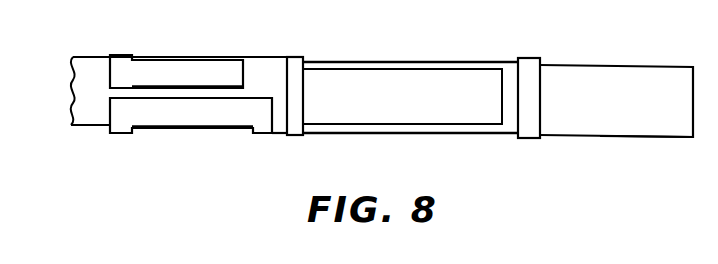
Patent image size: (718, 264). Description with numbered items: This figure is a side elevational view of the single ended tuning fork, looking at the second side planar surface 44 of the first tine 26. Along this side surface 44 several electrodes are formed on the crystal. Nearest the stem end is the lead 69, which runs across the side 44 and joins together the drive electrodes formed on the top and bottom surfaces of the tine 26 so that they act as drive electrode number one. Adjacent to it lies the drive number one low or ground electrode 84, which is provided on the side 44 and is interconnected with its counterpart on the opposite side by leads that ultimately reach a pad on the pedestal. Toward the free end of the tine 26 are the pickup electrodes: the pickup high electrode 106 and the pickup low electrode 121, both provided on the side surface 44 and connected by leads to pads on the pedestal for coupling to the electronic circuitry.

The pickup low electrode 121 is at (182, 65).
The pickup high electrode 106 is at (245, 112).
The drive No. 1 low electrode 84 is at (475, 80).
The lead 69 is at (528, 70).
The first tine 26 is at (632, 77).
The second side planar surface 44 is at (672, 120).